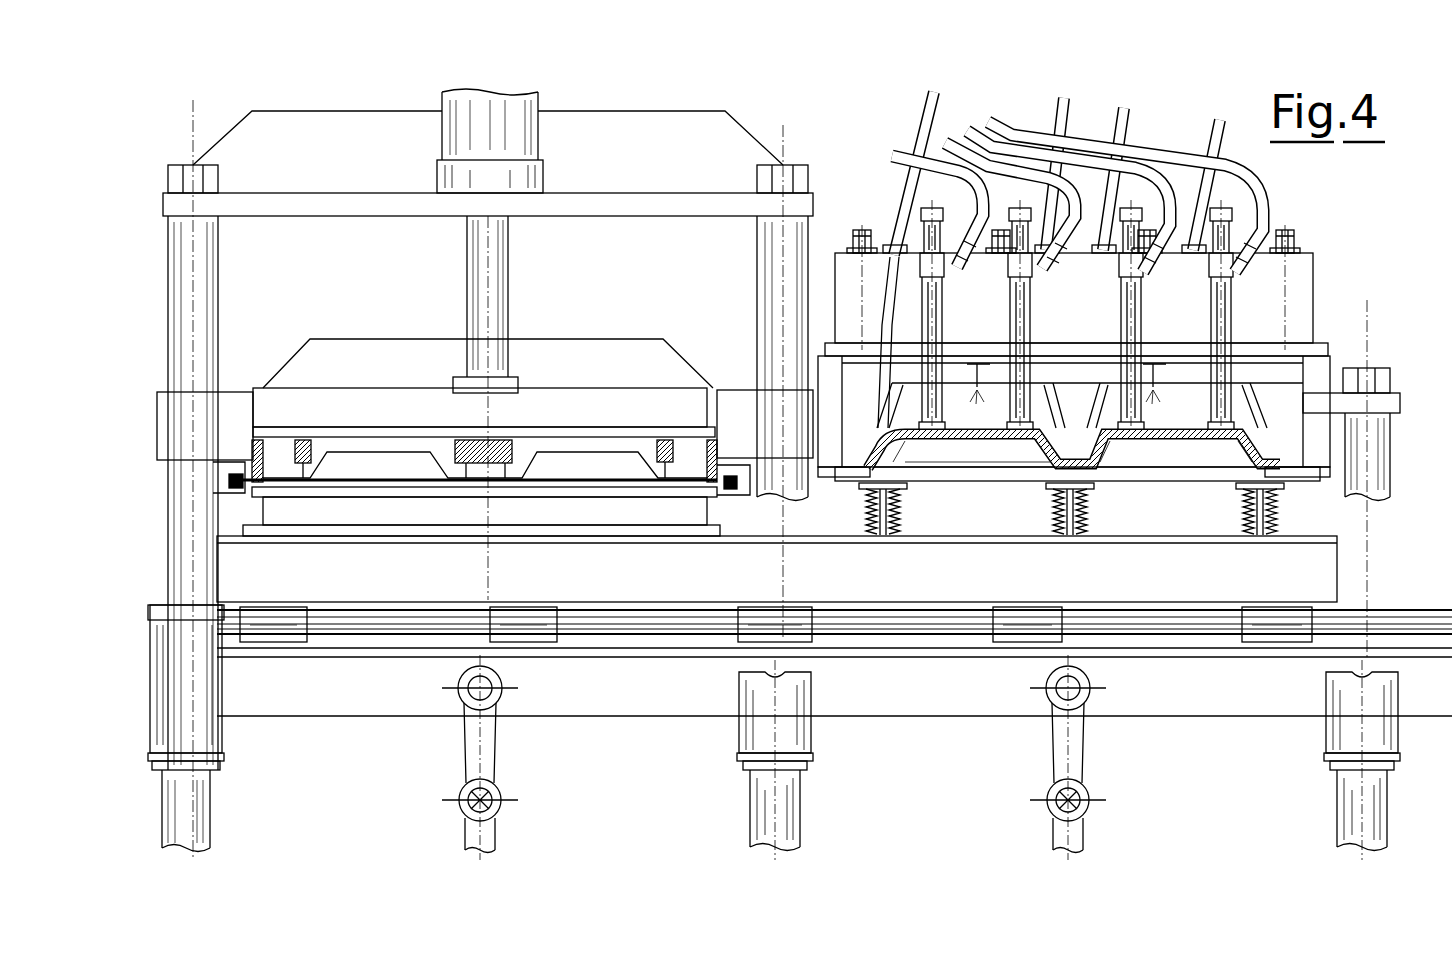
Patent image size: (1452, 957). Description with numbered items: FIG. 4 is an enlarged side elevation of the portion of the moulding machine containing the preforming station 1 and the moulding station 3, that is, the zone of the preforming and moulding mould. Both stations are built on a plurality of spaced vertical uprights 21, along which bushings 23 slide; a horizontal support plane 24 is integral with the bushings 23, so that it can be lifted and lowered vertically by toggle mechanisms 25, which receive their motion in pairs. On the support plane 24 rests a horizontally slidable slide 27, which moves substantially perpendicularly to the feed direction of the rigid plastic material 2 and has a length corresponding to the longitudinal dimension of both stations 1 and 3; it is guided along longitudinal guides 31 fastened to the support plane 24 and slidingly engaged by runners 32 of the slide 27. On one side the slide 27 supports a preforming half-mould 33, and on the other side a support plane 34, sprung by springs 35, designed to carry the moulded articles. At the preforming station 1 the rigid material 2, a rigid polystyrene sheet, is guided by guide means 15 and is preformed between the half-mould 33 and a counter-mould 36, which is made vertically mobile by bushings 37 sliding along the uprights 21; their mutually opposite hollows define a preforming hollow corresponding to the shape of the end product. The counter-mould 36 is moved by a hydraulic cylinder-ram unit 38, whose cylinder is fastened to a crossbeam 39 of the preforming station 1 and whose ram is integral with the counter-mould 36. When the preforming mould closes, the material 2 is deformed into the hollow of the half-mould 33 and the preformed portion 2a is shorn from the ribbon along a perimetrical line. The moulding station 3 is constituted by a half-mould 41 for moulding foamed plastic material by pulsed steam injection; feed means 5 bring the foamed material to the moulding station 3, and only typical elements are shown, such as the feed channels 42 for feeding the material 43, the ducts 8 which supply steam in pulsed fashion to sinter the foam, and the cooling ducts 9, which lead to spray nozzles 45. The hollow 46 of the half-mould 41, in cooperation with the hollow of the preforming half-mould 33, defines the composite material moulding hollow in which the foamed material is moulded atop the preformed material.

The preforming station 1 is at (221, 100).
The rigid plastic material 2 is at (687, 484).
The preformed portion 2a is at (1140, 470).
The moulding station 3 is at (1390, 343).
The feed means 5 is at (1015, 105).
The steam feed ducts 8 is at (1060, 108).
The cooling ducts 9 is at (927, 108).
The guide means 15 is at (228, 496).
The vertical uprights 21 is at (195, 826).
The bushings 23 is at (198, 737).
The horizontal support plane 24 is at (942, 703).
The toggle mechanisms 25 is at (448, 813).
The slide 27 is at (710, 577).
The longitudinal guides 31 is at (1402, 620).
The runners 32 is at (532, 640).
The preforming half-mould 33 is at (417, 497).
The support plane 34 is at (987, 488).
The springs 35 is at (1090, 518).
The counter-mould 36 is at (372, 420).
The bushings 37 is at (172, 406).
The cylinder-ram unit 38 is at (548, 133).
The crossbeam 39 is at (335, 196).
The half-mould 41 is at (1277, 382).
The feed channels 42 is at (1127, 308).
The material 43 is at (918, 458).
The spray nozzles 45 is at (958, 383).
The hollow 46 is at (1055, 473).